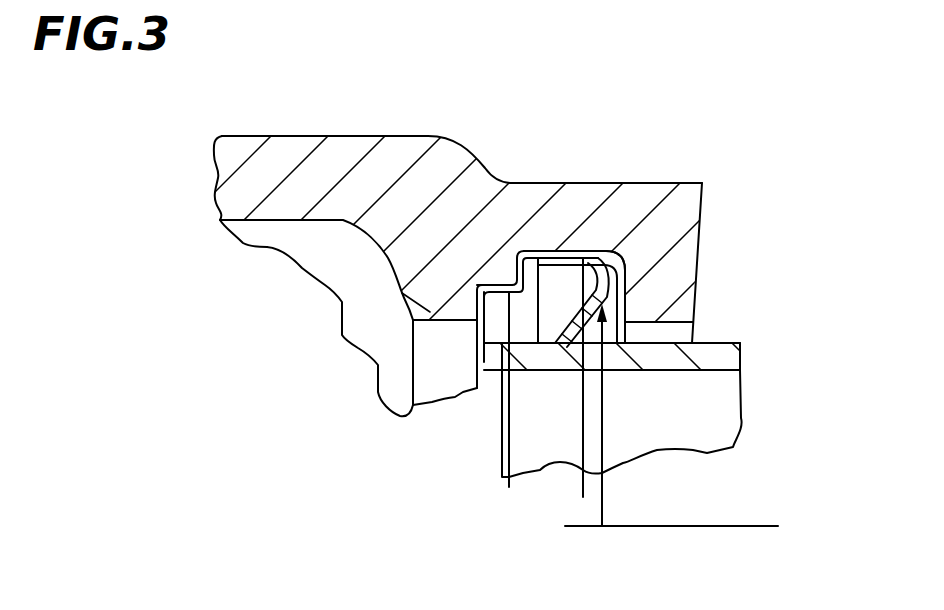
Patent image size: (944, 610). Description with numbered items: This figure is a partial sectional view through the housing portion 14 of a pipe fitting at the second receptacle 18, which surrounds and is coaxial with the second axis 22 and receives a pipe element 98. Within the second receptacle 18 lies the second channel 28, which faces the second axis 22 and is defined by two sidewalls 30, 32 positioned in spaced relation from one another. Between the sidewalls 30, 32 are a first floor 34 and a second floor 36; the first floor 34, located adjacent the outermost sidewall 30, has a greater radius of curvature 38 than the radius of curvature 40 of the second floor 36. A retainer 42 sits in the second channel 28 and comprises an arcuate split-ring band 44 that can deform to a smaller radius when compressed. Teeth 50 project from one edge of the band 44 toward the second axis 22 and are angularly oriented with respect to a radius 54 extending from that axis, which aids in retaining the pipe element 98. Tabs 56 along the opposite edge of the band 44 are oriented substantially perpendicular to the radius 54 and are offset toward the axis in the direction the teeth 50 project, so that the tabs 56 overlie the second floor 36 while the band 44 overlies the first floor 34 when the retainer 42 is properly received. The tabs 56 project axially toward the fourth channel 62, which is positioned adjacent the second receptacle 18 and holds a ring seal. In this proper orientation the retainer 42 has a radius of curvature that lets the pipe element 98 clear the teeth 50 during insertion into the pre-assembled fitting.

The second housing portion 14 is at (303, 136).
The fourth channel 62 is at (245, 233).
The sidewall 32 is at (402, 293).
The second floor 36 is at (512, 301).
The first floor 34 is at (544, 252).
The arcuate band 44 is at (560, 252).
The retainer 42 is at (627, 253).
The sidewall 30 is at (677, 265).
The second receptacle 18 is at (690, 334).
The pipe element 98 is at (726, 357).
The tabs 56 is at (548, 322).
The second channel 28 is at (543, 325).
The teeth 50 is at (558, 346).
The radius 54 is at (603, 382).
The radius of curvature 38 is at (582, 383).
The radius of curvature 40 is at (504, 480).
The second axis 22 is at (733, 527).